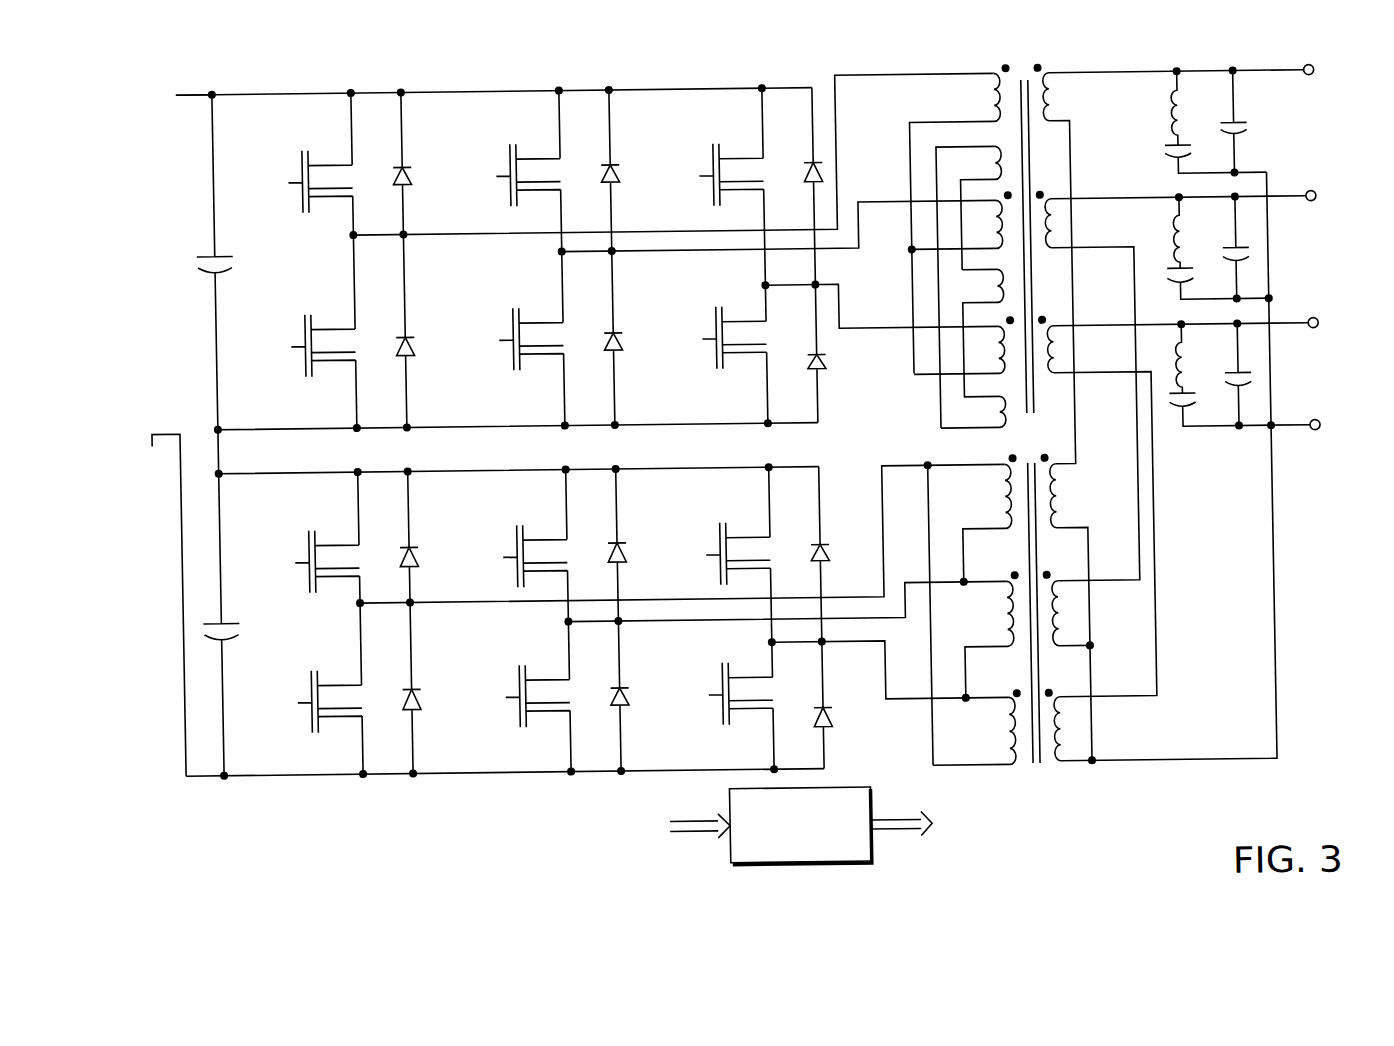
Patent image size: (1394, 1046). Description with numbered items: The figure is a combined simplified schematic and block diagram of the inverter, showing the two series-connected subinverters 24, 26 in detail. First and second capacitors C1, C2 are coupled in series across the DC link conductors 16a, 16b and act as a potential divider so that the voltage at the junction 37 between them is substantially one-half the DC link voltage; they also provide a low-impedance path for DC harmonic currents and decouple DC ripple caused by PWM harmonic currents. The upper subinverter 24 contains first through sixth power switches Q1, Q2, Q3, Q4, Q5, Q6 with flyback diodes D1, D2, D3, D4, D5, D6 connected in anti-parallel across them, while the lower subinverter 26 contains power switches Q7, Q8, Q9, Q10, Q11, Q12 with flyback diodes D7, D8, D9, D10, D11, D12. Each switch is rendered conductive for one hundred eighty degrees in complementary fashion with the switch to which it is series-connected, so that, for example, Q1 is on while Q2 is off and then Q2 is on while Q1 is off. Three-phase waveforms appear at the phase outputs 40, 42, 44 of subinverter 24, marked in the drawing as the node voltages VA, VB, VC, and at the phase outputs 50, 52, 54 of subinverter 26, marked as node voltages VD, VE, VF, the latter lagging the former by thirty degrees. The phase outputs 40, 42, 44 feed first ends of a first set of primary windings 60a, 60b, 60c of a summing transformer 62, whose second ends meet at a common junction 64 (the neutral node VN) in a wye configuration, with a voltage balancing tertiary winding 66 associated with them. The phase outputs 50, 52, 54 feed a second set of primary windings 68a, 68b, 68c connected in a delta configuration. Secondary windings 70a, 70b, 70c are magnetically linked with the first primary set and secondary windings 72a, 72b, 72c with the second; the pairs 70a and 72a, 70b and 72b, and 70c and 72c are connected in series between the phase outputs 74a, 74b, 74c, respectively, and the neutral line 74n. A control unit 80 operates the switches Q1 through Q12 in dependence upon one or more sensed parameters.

The DC link conductor 16a is at (200, 89).
The DC link conductor 16b is at (160, 433).
The subinverter 24 is at (381, 74).
The subinverter 26 is at (432, 780).
The junction 37 is at (217, 449).
The first capacitor C1 is at (211, 249).
The second capacitor C2 is at (207, 616).
The power switch Q1 is at (340, 161).
The power switch Q2 is at (331, 356).
The power switch Q3 is at (545, 156).
The power switch Q4 is at (544, 355).
The power switch Q5 is at (747, 157).
The power switch Q6 is at (746, 356).
The power switch Q7 is at (339, 541).
The power switch Q8 is at (335, 714).
The power switch Q9 is at (548, 538).
The power switch Q10 is at (542, 710).
The power switch Q11 is at (753, 538).
The power switch Q12 is at (747, 713).
The flyback diode D1 is at (410, 164).
The flyback diode D2 is at (412, 334).
The flyback diode D3 is at (615, 163).
The flyback diode D4 is at (615, 332).
The flyback diode D5 is at (813, 186).
The flyback diode D6 is at (823, 371).
The flyback diode D7 is at (413, 545).
The flyback diode D8 is at (411, 687).
The flyback diode D9 is at (620, 542).
The flyback diode D10 is at (663, 670).
The flyback diode D11 is at (823, 552).
The flyback diode D12 is at (827, 704).
The phase A output node VA is at (355, 234).
The phase B output node VB is at (557, 276).
The phase C output node VC is at (767, 286).
The phase D output node VD is at (353, 603).
The phase E output node VE is at (564, 619).
The phase F output node VF is at (768, 643).
The neutral node VN is at (913, 255).
The phase output 40 is at (411, 236).
The phase output 42 is at (569, 253).
The phase output 44 is at (771, 288).
The phase output 50 is at (417, 597).
The phase output 52 is at (569, 624).
The phase output 54 is at (771, 643).
The primary winding 60a is at (992, 106).
The primary winding 60b is at (989, 236).
The primary winding 60c is at (986, 363).
The summing transformer 62 is at (1029, 69).
The common junction 64 is at (921, 261).
The voltage balancing tertiary winding 66 is at (970, 161).
The primary winding 68a is at (989, 471).
The primary winding 68b is at (997, 604).
The primary winding 68c is at (995, 719).
The secondary winding 70a is at (1066, 94).
The secondary winding 70b is at (1064, 243).
The secondary winding 70c is at (1061, 372).
The secondary winding 72a is at (1049, 472).
The secondary winding 72b is at (1062, 609).
The secondary winding 72c is at (1060, 722).
The phase output 74a is at (1268, 77).
The phase output 74b is at (1296, 203).
The phase output 74c is at (1294, 330).
The neutral line 74n is at (1292, 432).
The control unit 80 is at (830, 865).